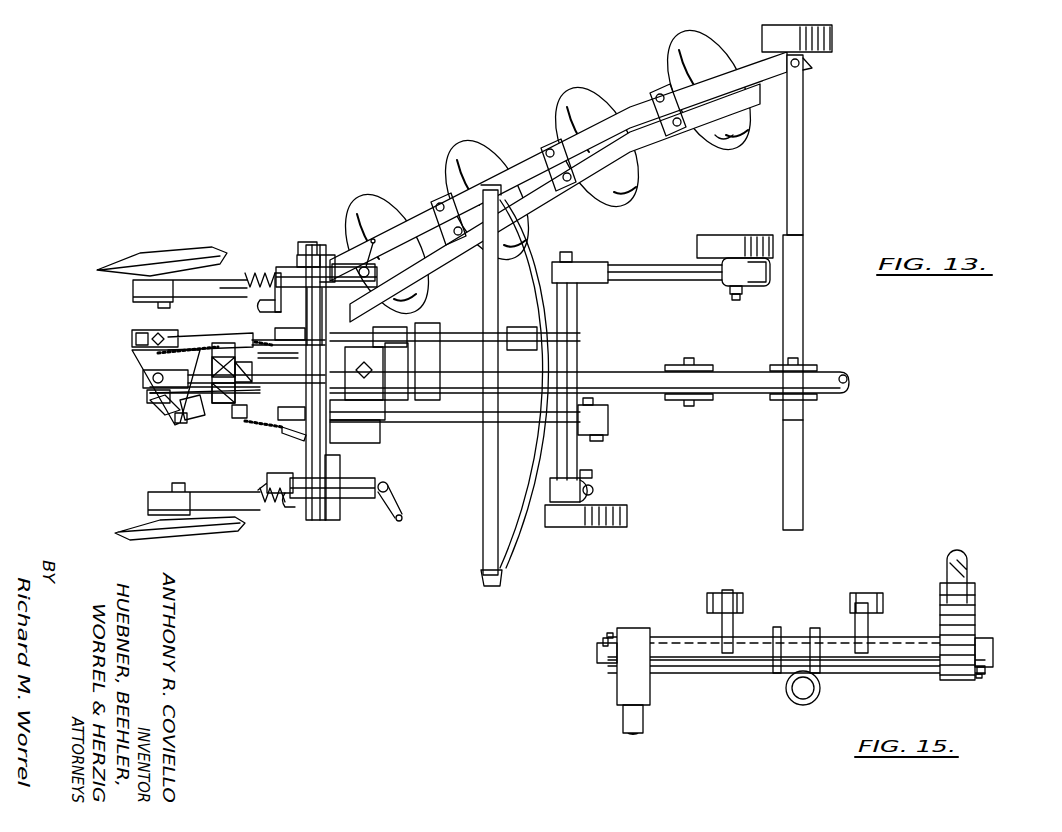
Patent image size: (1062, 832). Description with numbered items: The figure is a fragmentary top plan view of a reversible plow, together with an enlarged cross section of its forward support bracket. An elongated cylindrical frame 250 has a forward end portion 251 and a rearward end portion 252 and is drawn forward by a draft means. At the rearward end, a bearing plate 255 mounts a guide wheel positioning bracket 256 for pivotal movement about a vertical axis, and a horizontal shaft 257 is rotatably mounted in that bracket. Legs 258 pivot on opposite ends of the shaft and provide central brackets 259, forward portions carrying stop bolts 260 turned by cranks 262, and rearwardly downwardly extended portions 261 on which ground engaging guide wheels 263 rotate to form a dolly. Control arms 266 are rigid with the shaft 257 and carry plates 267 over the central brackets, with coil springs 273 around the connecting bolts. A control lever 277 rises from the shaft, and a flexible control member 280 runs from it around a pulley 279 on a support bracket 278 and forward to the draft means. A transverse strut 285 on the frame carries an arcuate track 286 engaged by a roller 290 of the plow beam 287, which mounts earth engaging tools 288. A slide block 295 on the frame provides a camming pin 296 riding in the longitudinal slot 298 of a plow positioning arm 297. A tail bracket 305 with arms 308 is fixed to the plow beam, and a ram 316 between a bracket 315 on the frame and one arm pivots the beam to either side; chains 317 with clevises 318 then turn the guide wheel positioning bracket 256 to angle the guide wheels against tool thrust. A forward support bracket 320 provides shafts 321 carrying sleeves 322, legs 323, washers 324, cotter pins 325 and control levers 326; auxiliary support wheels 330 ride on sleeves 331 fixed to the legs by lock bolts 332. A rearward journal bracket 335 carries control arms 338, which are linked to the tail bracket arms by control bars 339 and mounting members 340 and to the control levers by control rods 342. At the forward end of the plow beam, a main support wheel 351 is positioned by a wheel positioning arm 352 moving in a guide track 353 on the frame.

In FIG. 13, the frame 250 is at (638, 372).
In FIG. 15, the frame 250 is at (792, 700).
In FIG. 13, the forward end portion 251 is at (845, 374).
In FIG. 13, the rearward end portion 252 is at (150, 396).
In FIG. 13, the bearing plate 255 is at (385, 402).
In FIG. 13, the guide wheel positioning bracket 256 is at (375, 432).
In FIG. 13, the shaft 257 is at (395, 333).
In FIG. 13, the legs 258 is at (252, 277).
In FIG. 13, the central brackets 259 is at (310, 242).
In FIG. 13, the stop bolts 260 is at (390, 488).
In FIG. 13, the rearwardly downwardly extended portions 261 is at (185, 283).
In FIG. 13, the cranks 262 is at (400, 522).
In FIG. 13, the ground engaging guide wheels 263 is at (125, 260).
In FIG. 13, the control arms 266 is at (240, 270).
In FIG. 13, the plates 267 is at (280, 290).
In FIG. 13, the coil springs 273 is at (270, 270).
In FIG. 13, the control lever 277 is at (337, 380).
In FIG. 13, the support bracket 278 is at (140, 388).
In FIG. 13, the pulley 279 is at (140, 380).
In FIG. 13, the flexible control member 280 is at (222, 343).
In FIG. 13, the transverse strut 285 is at (483, 290).
In FIG. 13, the arcuate track 286 is at (533, 272).
In FIG. 13, the plow beam 287 is at (727, 105).
In FIG. 13, the earth engaging tools 288 is at (368, 205).
In FIG. 13, the roller 290 is at (495, 190).
In FIG. 13, the slide block 295 is at (195, 407).
In FIG. 13, the camming pin 296 is at (235, 410).
In FIG. 13, the plow positioning arm 297 is at (360, 267).
In FIG. 13, the longitudinal slot 298 is at (175, 405).
In FIG. 13, the tail bracket 305 is at (155, 342).
In FIG. 13, the arms 308 is at (137, 340).
In FIG. 13, the bracket 315 is at (440, 413).
In FIG. 13, the ram 316 is at (405, 320).
In FIG. 13, the chains 317 is at (165, 352).
In FIG. 13, the clevises 318 is at (143, 372).
In FIG. 13, the forward support bracket 320 is at (582, 355).
In FIG. 15, the forward support bracket 320 is at (840, 673).
In FIG. 13, the shafts 321 is at (585, 263).
In FIG. 15, the shafts 321 is at (600, 653).
In FIG. 13, the sleeves 322 is at (580, 312).
In FIG. 15, the sleeves 322 is at (683, 657).
In FIG. 13, the legs 323 is at (600, 270).
In FIG. 15, the legs 323 is at (622, 686).
In FIG. 13, the washers 324 is at (572, 256).
In FIG. 15, the washers 324 is at (608, 635).
In FIG. 15, the cotter pins 325 is at (603, 641).
In FIG. 13, the control levers 326 is at (605, 420).
In FIG. 15, the control levers 326 is at (726, 622).
In FIG. 13, the auxiliary ground engaging support wheels 330 is at (748, 238).
In FIG. 13, the sleeves 331 is at (750, 288).
In FIG. 13, the lock bolts 332 is at (735, 295).
In FIG. 13, the rearward journal bracket 335 is at (262, 425).
In FIG. 13, the control arms 338 is at (245, 345).
In FIG. 13, the control bars 339 is at (160, 333).
In FIG. 13, the mounting members 340 is at (138, 339).
In FIG. 13, the control rods 342 is at (435, 395).
In FIG. 13, the main support wheel 351 is at (832, 40).
In FIG. 13, the wheel positioning arm 352 is at (803, 135).
In FIG. 13, the guide track 353 is at (800, 318).